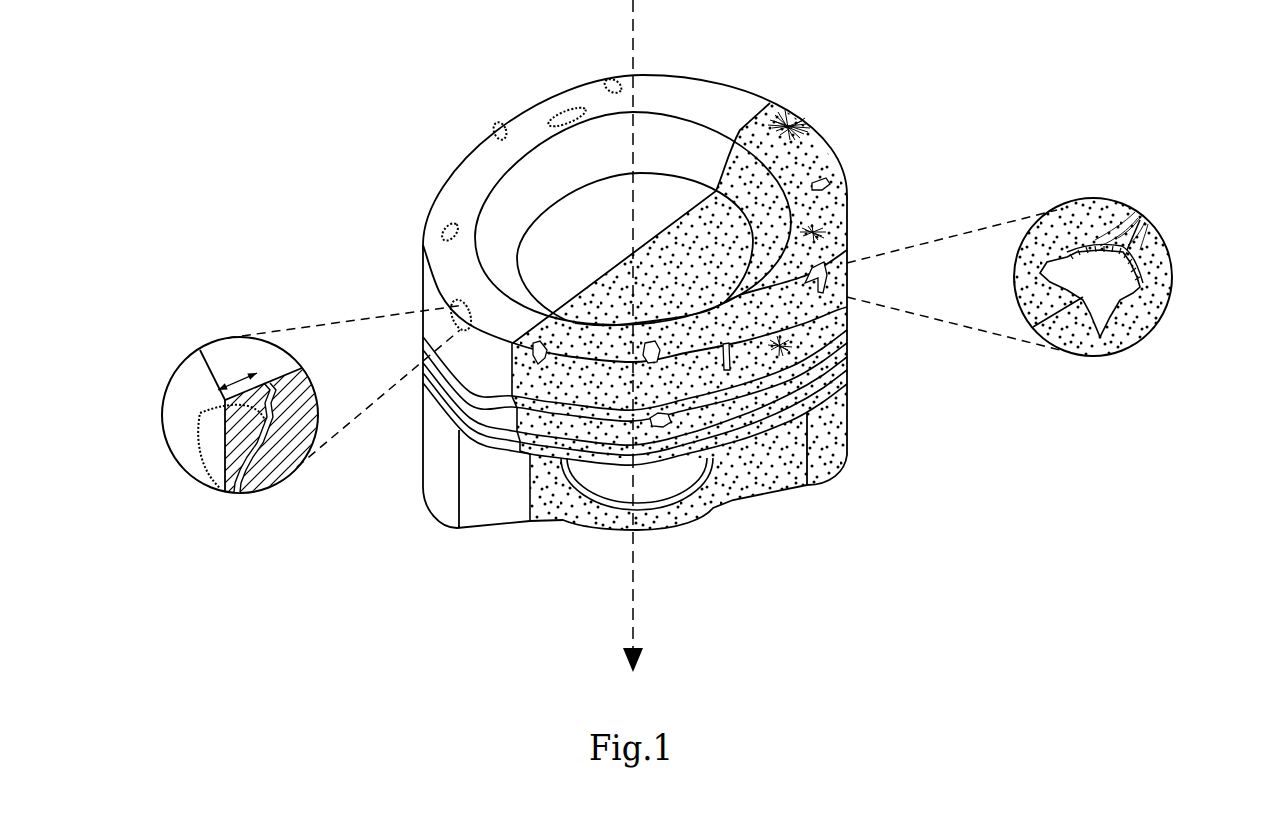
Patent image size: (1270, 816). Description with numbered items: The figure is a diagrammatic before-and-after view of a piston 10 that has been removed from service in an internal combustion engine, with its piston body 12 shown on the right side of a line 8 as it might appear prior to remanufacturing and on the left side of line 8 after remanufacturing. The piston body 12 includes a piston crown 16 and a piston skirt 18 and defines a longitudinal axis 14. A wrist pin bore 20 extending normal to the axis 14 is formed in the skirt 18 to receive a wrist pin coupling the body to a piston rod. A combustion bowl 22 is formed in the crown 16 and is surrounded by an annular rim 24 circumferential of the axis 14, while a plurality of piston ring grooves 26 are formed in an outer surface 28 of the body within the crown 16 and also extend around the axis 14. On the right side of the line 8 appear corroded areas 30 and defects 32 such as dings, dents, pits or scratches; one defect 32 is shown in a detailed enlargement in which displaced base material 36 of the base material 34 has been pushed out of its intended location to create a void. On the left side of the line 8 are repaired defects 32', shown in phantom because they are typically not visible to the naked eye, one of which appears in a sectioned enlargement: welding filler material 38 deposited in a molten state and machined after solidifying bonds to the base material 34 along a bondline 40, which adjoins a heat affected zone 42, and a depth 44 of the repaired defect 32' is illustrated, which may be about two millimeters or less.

The line 8 is at (770, 105).
The piston 10 is at (394, 153).
The piston body 12 is at (700, 73).
The longitudinal axis 14 is at (633, 582).
The piston crown 16 is at (423, 266).
The piston skirt 18 is at (423, 430).
The wrist pin bore 20 is at (670, 508).
The combustion bowl 22 is at (560, 218).
The annular rim 24 is at (578, 90).
The piston ring grooves 26 is at (848, 322).
The outer surface 28 is at (576, 398).
The corroded areas 30 is at (812, 140).
The defects 32 is at (836, 291).
The repaired defects 32' is at (367, 280).
The base material 34 is at (300, 473).
The displaced base material 36 is at (1140, 290).
The welding filler material 38 is at (222, 488).
The bondline 40 is at (262, 378).
The heat affected zone 42 is at (297, 447).
The depth 44 is at (243, 381).